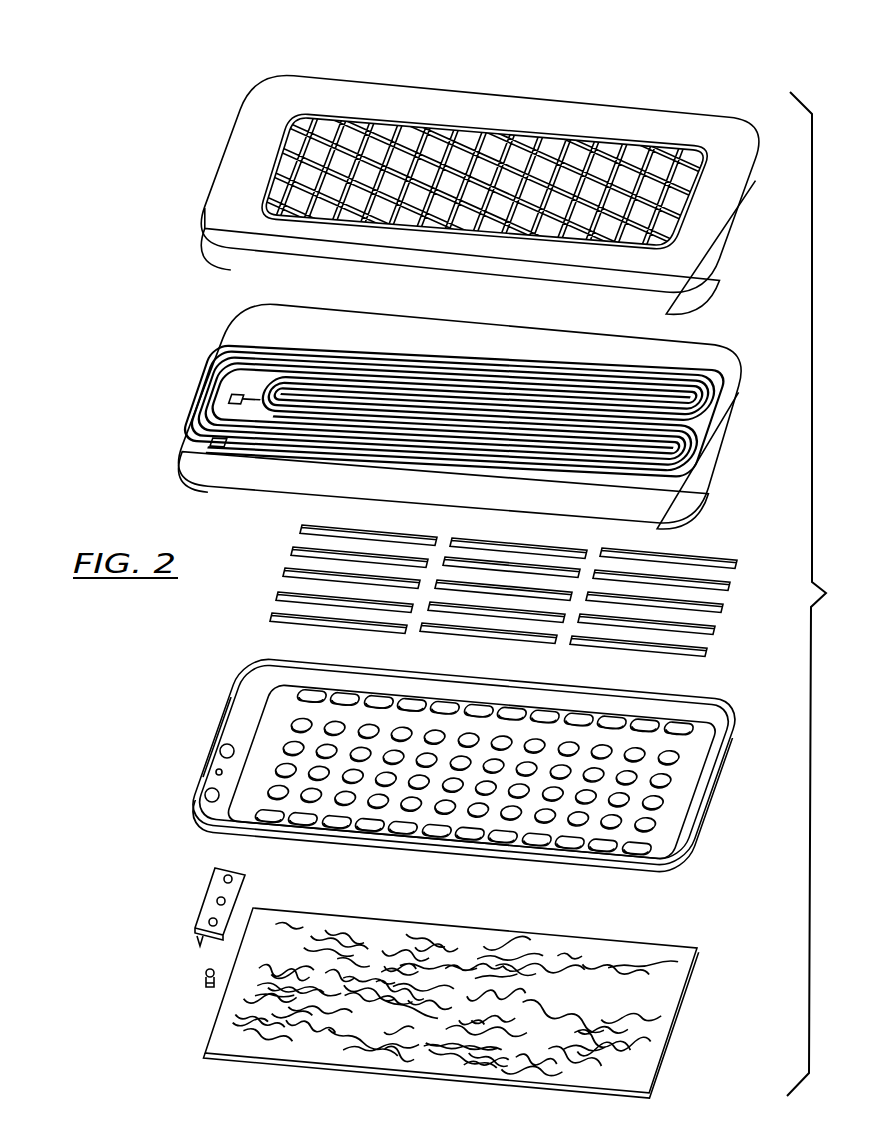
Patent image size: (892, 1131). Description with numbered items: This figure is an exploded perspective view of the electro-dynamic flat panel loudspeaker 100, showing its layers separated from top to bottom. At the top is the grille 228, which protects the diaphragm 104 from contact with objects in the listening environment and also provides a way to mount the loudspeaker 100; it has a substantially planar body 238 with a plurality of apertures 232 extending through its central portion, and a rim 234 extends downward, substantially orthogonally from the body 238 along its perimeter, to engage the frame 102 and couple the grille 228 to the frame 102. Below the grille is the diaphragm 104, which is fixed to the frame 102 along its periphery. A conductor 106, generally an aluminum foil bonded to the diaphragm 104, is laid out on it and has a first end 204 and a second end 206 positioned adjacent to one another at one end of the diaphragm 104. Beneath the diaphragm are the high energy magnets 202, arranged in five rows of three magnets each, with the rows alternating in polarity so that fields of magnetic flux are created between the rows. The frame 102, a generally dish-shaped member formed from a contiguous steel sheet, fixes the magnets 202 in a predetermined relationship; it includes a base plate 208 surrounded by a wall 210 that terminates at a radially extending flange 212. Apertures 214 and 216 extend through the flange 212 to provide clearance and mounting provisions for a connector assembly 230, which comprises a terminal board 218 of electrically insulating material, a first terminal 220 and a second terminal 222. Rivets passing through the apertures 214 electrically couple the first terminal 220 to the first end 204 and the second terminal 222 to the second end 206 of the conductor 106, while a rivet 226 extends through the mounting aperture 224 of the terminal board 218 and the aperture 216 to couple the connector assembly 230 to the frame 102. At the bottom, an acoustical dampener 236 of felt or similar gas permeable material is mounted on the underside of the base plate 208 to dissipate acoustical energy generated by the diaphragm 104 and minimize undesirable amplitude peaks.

The electro-dynamic loudspeaker 100 is at (705, 75).
The frame 102 is at (451, 747).
The diaphragm 104 is at (457, 404).
The conductor 106 is at (659, 378).
The high energy magnets 202 is at (270, 571).
The first end 204 is at (213, 444).
The second end 206 is at (230, 400).
The base plate 208 is at (283, 703).
The wall 210 is at (600, 705).
The flange 212 is at (212, 695).
The apertures 214 is at (228, 744).
The aperture 216 is at (217, 770).
The terminal board 218 is at (249, 919).
The first terminal 220 is at (213, 925).
The second terminal 222 is at (232, 880).
The mounting aperture 224 is at (224, 900).
The rivet 226 is at (208, 980).
The grille 228 is at (494, 221).
The connector assembly 230 is at (200, 889).
The apertures 232 is at (548, 165).
The rim 234 is at (742, 218).
The acoustical dampener 236 is at (688, 952).
The planar body 238 is at (468, 88).